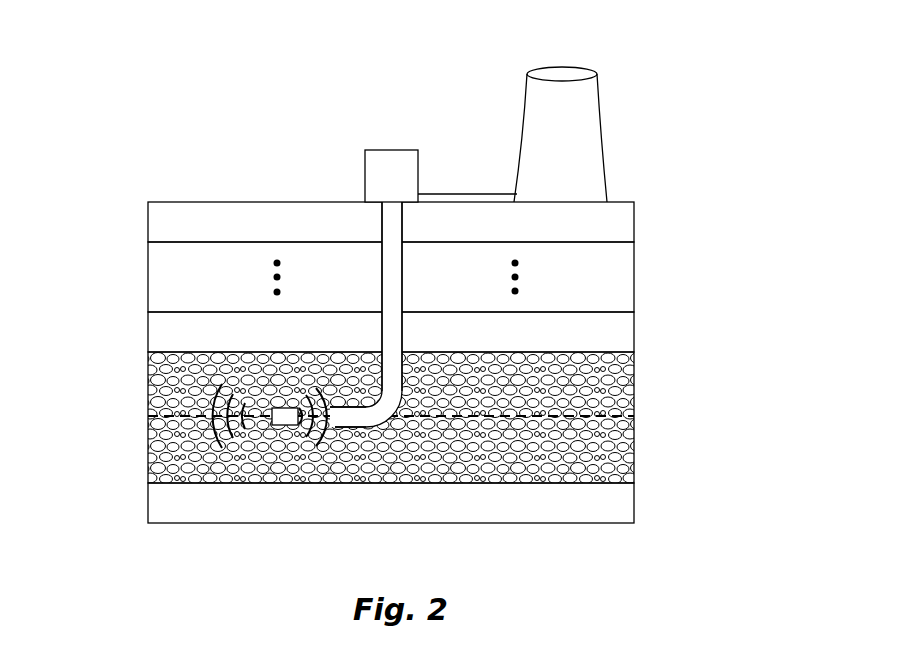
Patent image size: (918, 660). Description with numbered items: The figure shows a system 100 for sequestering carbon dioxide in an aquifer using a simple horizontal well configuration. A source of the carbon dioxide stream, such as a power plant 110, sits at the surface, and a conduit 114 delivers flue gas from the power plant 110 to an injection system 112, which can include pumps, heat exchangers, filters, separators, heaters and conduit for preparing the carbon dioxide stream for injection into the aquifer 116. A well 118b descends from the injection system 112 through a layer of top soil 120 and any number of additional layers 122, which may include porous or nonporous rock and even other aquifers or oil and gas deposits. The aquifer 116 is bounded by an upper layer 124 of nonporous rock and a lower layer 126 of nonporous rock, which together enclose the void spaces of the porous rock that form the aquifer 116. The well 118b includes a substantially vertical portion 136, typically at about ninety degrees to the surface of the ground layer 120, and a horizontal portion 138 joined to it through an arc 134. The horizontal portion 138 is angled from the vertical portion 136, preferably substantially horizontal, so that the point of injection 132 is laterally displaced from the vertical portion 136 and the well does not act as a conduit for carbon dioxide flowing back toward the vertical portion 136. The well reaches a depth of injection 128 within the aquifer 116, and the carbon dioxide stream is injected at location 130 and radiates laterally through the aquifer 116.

The system 100 is at (722, 102).
The power plant 110 is at (600, 113).
The injection system 112 is at (385, 150).
The conduit 114 is at (442, 194).
The aquifer 116 is at (148, 405).
The well 118b is at (382, 223).
The layer of top soil 120 is at (148, 223).
The additional layers 122 is at (148, 278).
The upper layer of nonporous rock 124 is at (148, 332).
The lower layer of nonporous rock 126 is at (148, 502).
The depth of injection 128 is at (634, 418).
The location of injection 130 is at (220, 440).
The point of injection 132 is at (270, 425).
The arc 134 is at (387, 427).
The vertical portion 136 is at (402, 286).
The horizontal portion 138 is at (348, 427).